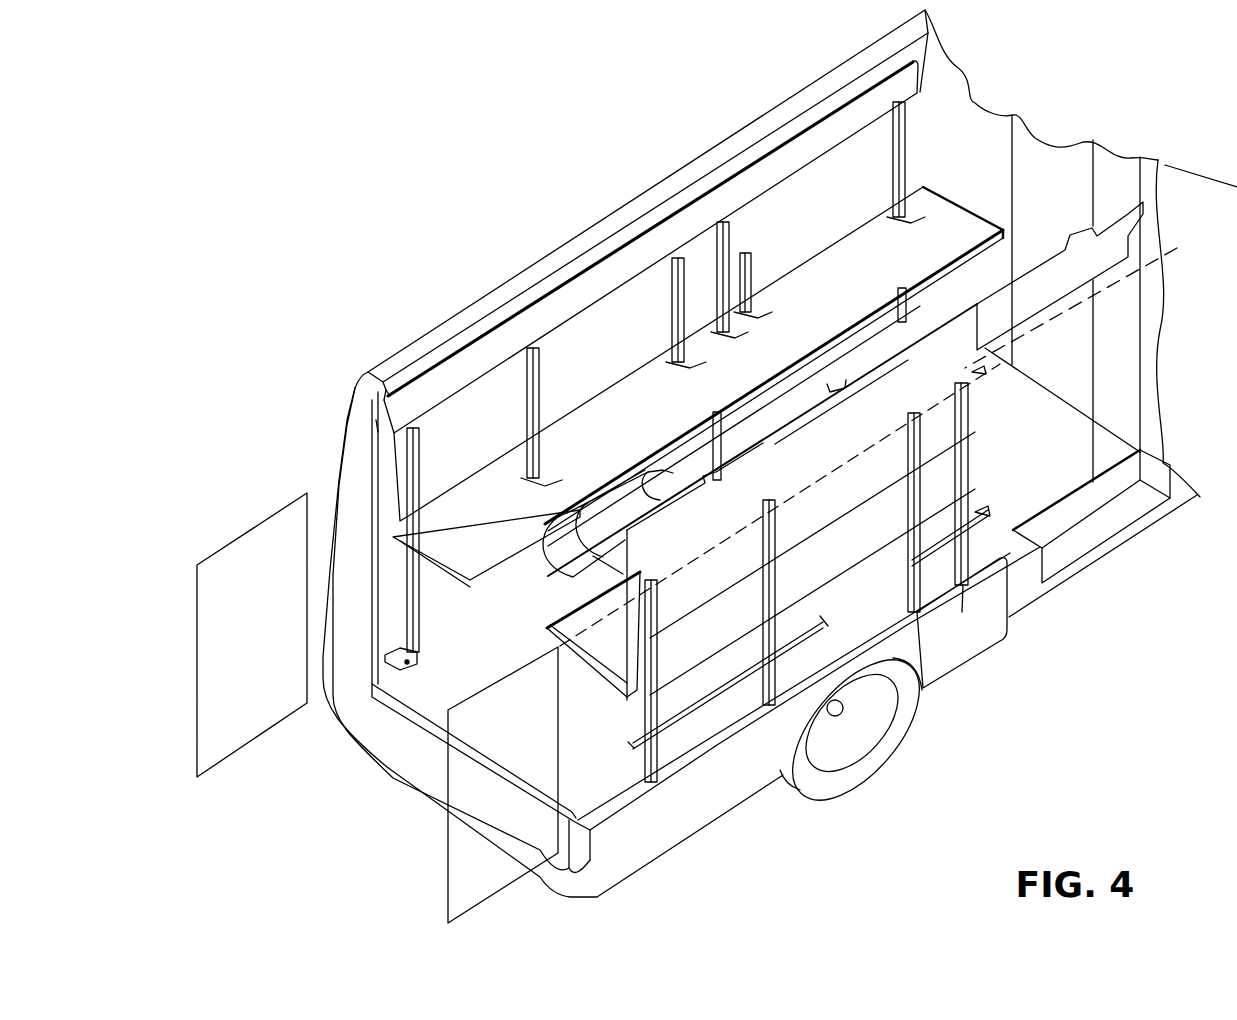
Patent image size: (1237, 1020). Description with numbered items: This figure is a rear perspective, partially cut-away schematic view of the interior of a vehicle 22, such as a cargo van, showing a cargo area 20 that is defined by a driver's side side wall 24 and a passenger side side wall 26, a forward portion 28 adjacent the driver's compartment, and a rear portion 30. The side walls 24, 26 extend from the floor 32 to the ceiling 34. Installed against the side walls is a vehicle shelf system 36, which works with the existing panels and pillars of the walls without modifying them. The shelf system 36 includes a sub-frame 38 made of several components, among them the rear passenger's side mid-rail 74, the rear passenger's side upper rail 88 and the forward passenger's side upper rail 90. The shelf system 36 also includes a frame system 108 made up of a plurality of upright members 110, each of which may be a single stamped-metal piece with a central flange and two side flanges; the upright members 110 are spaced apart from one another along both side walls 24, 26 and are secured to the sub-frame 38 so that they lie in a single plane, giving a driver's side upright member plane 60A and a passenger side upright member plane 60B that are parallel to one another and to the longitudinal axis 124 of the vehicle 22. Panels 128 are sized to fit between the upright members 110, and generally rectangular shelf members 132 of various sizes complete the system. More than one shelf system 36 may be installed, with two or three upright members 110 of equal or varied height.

The cargo area 20 is at (946, 62).
The vehicle 22 is at (1030, 132).
The driver's side side wall 24 is at (850, 95).
The passenger side side wall 26 is at (996, 613).
The forward portion 28 is at (962, 94).
The rear portion 30 is at (439, 382).
The floor 32 is at (594, 733).
The ceiling 34 is at (491, 298).
The vehicle shelf system 36 is at (372, 423).
The sub-frame 38 is at (982, 378).
The driver's side upright member plane 60A is at (255, 527).
The passenger side upright member plane 60B is at (447, 857).
The rear passenger's side mid-rail 74 is at (824, 622).
The rear passenger's side upper rail 88 is at (722, 510).
The forward passenger's side upper rail 90 is at (831, 445).
The frame system 108 is at (700, 200).
The upright member 110 is at (892, 140).
The longitudinal axis 124 is at (1178, 245).
The panel 128 is at (695, 250).
The shelf member 132 is at (848, 288).